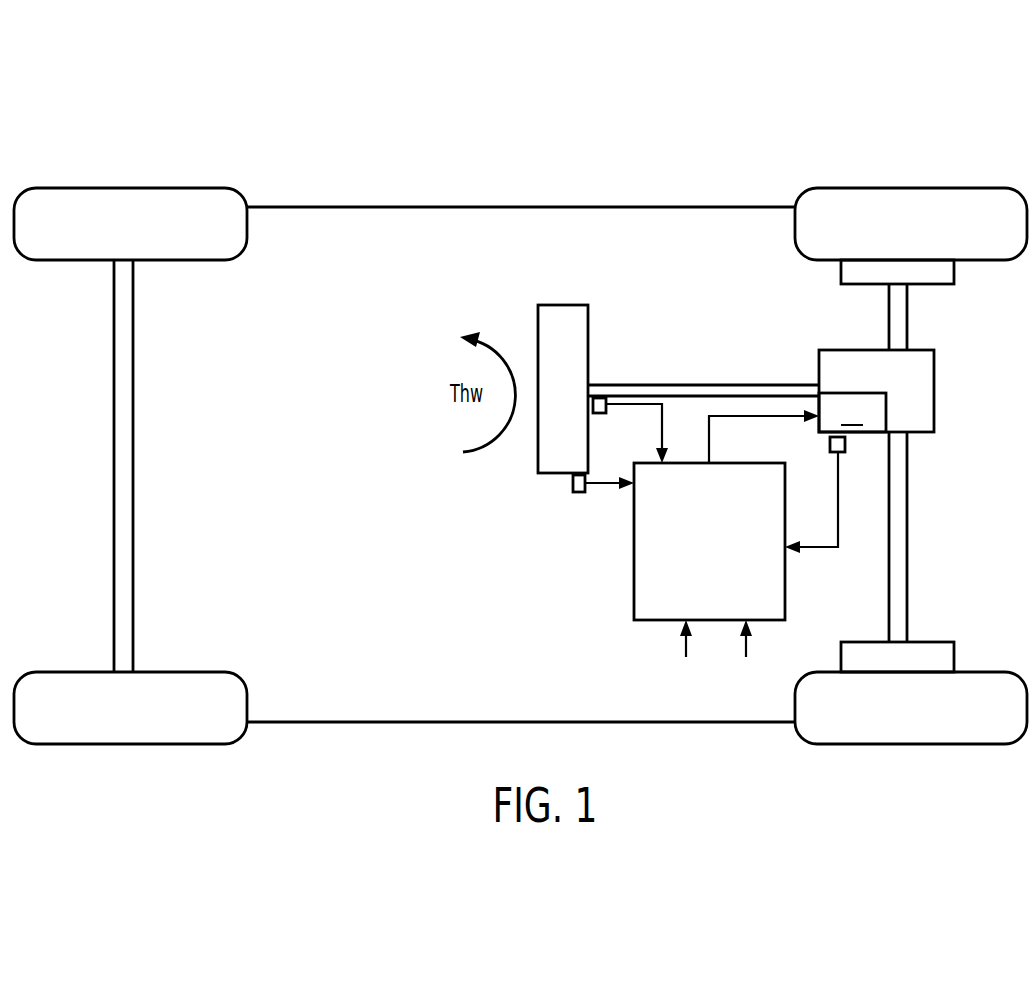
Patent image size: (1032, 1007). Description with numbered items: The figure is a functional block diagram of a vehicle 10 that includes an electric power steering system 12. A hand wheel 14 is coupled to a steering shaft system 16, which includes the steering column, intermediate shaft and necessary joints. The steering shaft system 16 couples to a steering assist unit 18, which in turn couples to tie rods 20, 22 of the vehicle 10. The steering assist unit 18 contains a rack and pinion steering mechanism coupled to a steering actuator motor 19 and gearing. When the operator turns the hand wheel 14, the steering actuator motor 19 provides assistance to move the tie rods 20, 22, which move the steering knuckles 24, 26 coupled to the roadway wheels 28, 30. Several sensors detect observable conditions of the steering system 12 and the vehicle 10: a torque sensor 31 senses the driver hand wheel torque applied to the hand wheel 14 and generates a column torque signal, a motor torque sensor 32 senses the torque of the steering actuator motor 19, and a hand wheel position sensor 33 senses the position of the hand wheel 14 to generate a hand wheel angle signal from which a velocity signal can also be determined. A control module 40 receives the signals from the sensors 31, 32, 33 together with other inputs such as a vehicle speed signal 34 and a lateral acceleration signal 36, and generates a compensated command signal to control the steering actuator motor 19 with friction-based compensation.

The vehicle 10 is at (560, 115).
The steering system 12 is at (676, 285).
The hand wheel 14 is at (565, 303).
The steering shaft system 16 is at (703, 383).
The steering assist unit 18 is at (937, 390).
The steering actuator motor 19 is at (852, 412).
The tie rod 20 is at (909, 325).
The tie rod 22 is at (909, 518).
The steering knuckle 24 is at (838, 275).
The steering knuckle 26 is at (874, 641).
The roadway wheel 28 is at (908, 188).
The roadway wheel 30 is at (980, 672).
The torque sensor 31 is at (600, 414).
The motor torque sensor 32 is at (843, 455).
The hand wheel position sensor 33 is at (573, 492).
The vehicle speed signal 34 is at (686, 656).
The lateral acceleration signal 36 is at (746, 656).
The control module 40 is at (727, 462).